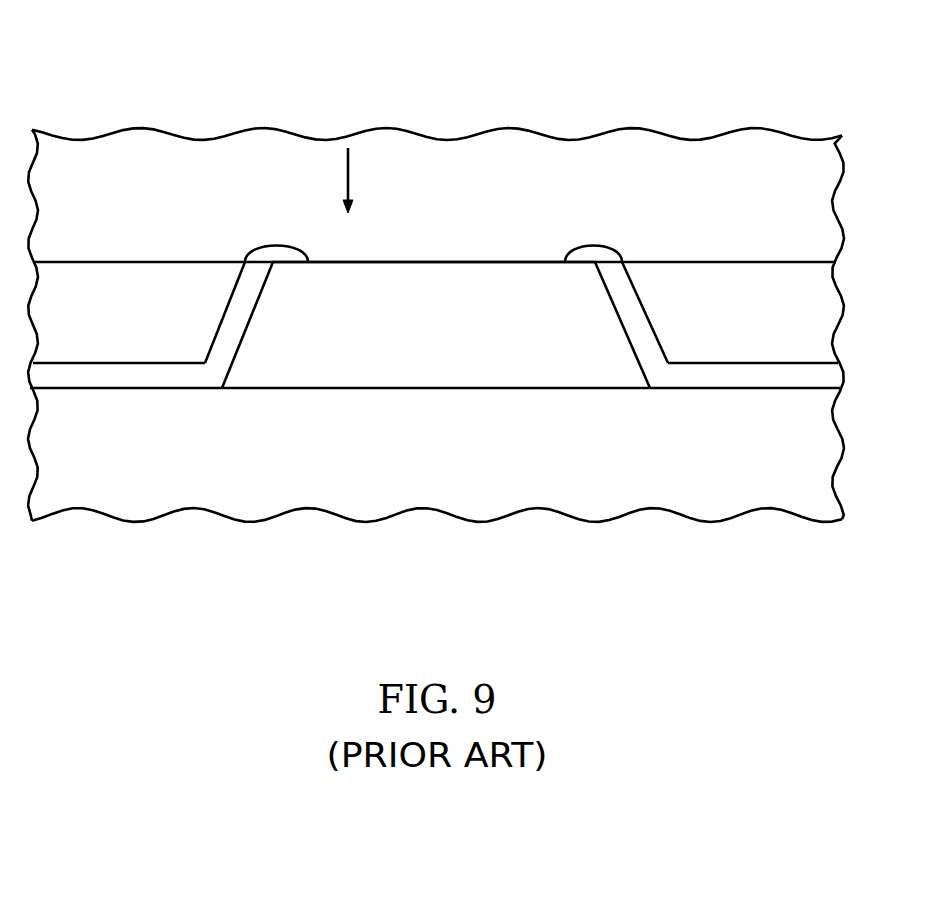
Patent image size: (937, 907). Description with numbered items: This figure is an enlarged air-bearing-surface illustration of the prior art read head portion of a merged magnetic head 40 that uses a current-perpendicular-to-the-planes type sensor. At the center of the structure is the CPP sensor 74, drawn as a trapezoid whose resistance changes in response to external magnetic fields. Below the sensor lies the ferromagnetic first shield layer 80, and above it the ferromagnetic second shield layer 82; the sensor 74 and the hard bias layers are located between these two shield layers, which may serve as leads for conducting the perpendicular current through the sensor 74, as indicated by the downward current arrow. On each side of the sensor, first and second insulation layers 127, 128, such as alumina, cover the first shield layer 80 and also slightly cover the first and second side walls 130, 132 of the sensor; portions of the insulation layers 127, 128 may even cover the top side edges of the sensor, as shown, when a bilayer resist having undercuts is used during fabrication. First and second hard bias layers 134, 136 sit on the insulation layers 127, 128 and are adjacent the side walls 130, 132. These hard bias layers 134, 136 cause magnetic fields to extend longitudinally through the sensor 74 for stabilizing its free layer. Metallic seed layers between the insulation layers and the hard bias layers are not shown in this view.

The merged magnetic head 40 is at (215, 118).
The CPP sensor 74 is at (513, 260).
The first shield layer 80 is at (188, 475).
The second shield layer 82 is at (808, 185).
The first insulation layer 127 is at (110, 375).
The second insulation layer 128 is at (763, 373).
The first side wall 130 is at (255, 302).
The second side wall 132 is at (615, 302).
The first hard bias layer 134 is at (112, 287).
The second hard bias layer 136 is at (758, 278).